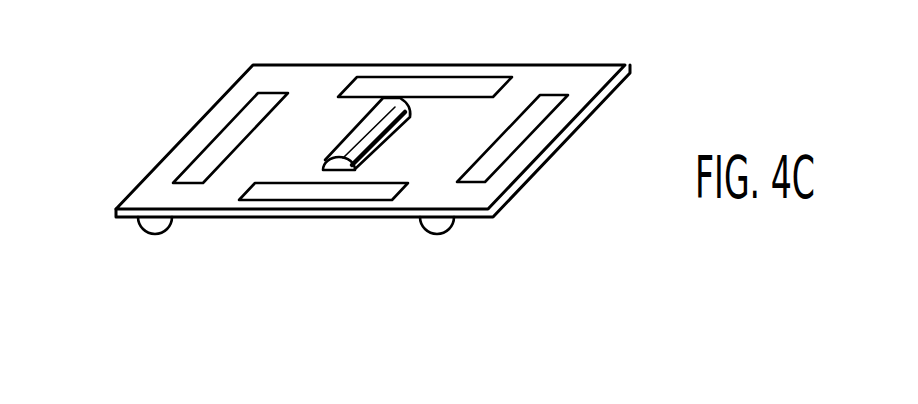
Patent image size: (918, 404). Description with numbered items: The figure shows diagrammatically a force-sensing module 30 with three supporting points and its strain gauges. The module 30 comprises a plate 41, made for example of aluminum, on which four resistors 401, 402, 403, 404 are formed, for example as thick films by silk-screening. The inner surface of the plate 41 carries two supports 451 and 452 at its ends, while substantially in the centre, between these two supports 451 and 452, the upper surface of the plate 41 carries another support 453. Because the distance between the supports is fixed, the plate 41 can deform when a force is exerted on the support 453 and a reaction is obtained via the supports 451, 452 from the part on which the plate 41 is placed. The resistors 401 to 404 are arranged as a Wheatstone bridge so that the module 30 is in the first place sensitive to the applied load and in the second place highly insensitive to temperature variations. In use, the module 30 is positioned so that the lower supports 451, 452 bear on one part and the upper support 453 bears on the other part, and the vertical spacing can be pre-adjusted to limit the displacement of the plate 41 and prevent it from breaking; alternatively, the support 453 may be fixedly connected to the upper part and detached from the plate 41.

The module 30 is at (306, 52).
The plate 41 is at (570, 63).
The resistor 401 is at (222, 148).
The resistor 402 is at (437, 88).
The resistor 403 is at (523, 124).
The resistor 404 is at (290, 188).
The support 451 is at (153, 237).
The support 452 is at (438, 233).
The support 453 is at (363, 134).